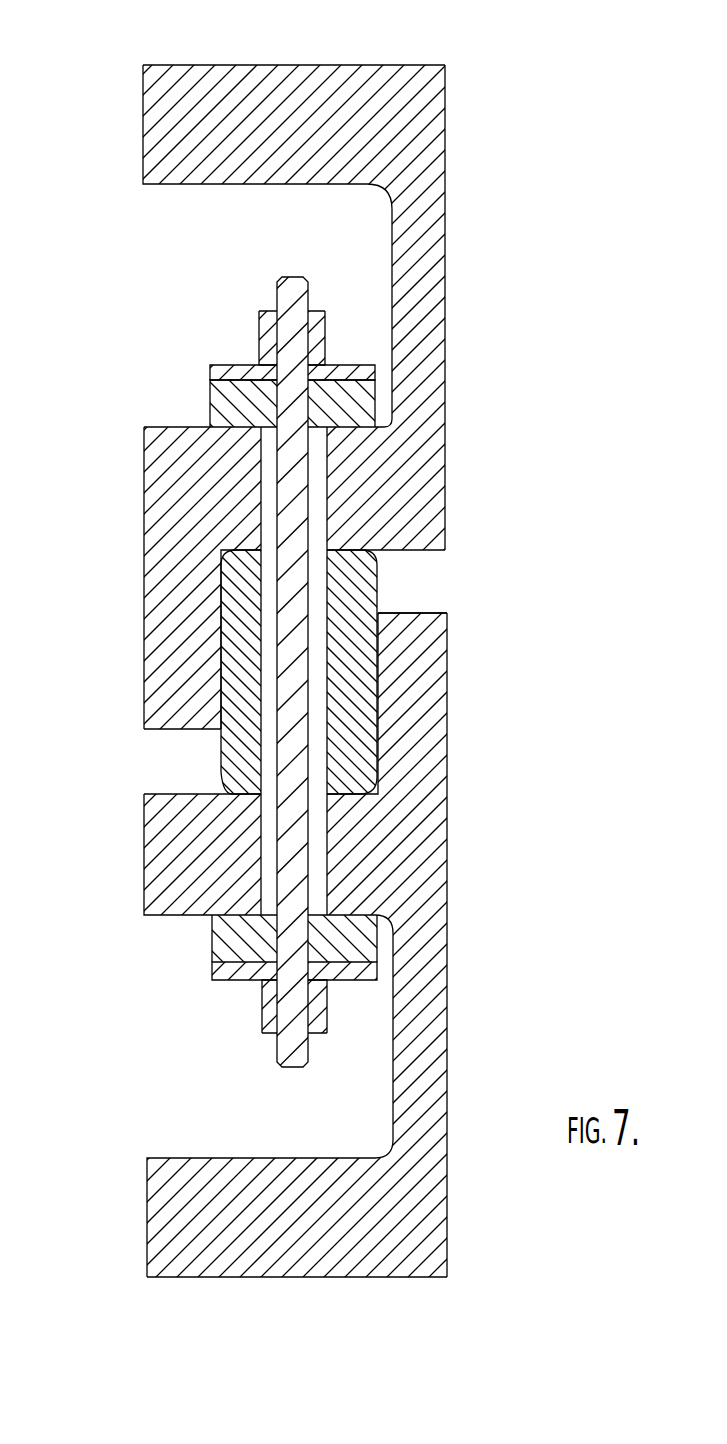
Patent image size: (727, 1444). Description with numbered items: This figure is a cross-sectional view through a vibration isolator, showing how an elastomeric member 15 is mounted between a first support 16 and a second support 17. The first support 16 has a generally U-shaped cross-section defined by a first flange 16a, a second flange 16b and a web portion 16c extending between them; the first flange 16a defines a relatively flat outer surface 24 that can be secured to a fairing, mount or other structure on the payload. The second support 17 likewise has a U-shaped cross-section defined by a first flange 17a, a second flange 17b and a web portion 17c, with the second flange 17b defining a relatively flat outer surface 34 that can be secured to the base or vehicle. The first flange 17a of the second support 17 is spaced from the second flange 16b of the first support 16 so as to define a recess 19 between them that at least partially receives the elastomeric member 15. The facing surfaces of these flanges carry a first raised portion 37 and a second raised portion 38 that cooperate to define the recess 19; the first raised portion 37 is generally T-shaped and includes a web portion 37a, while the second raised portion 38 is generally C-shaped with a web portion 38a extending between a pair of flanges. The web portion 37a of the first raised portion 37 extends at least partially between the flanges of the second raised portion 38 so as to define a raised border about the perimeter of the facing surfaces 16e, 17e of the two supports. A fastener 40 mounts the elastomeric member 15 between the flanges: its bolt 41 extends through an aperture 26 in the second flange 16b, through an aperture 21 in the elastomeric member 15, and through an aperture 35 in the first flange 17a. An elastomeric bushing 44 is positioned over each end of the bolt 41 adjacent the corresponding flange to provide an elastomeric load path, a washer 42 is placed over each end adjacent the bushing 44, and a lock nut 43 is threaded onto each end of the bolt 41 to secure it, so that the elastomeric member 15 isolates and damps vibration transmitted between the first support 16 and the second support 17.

The elastomeric member 15 is at (370, 600).
The first support 16 is at (445, 201).
The first flange of the first support 16a is at (165, 145).
The second flange of the first support 16b is at (150, 475).
The web portion of the first support 16c is at (437, 342).
The facing surface of the first support 16e is at (388, 556).
The second support 17 is at (437, 997).
The first flange of the second support 17a is at (167, 876).
The second flange of the second support 17b is at (165, 1215).
The web portion of the second support 17c is at (450, 1123).
The facing surface of the second support 17e is at (184, 788).
The recess 19 is at (430, 575).
The aperture of the elastomeric member 21 is at (317, 617).
The outer surface of the first flange 24 is at (228, 58).
The aperture of the second flange of the first support 26 is at (317, 467).
The outer surface of the second flange 34 is at (182, 1282).
The aperture of the first flange of the second support 35 is at (268, 878).
The first raised portion 37 is at (167, 640).
The web portion of the first raised portion 37a is at (162, 615).
The second raised portion 38 is at (435, 660).
The web portion of the second raised portion 38a is at (432, 716).
The fastener 40 is at (250, 318).
The bolt 41 is at (294, 290).
The washer 42 is at (273, 348).
The lock nut 43 is at (212, 375).
The elastomeric bushing 44 is at (217, 421).